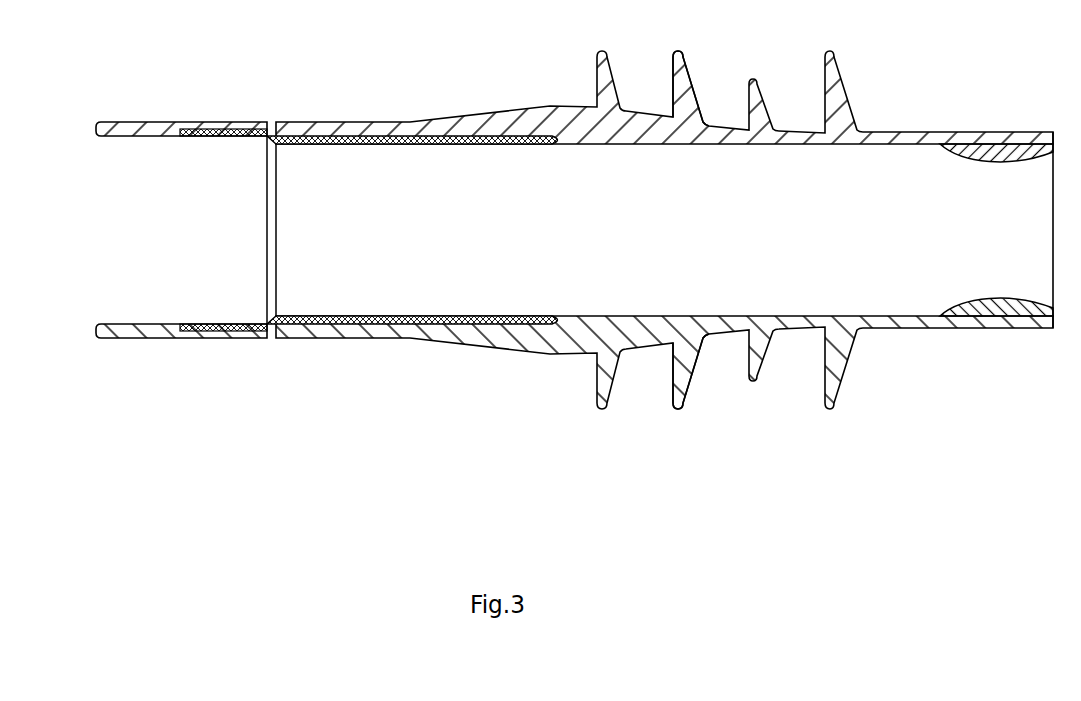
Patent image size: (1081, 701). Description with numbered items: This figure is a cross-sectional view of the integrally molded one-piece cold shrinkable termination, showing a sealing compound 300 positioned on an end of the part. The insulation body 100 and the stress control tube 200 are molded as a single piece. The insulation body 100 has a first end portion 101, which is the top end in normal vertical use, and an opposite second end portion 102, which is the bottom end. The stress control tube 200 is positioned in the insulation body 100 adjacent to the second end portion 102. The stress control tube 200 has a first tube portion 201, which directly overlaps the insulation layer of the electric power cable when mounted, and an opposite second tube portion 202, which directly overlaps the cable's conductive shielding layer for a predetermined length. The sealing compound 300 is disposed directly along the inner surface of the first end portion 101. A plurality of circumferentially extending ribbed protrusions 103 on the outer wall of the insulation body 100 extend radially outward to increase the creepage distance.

The insulation body 100 is at (600, 100).
The first end portion 101 is at (1003, 138).
The second end portion 102 is at (135, 128).
The ribbed protrusions 103 is at (683, 68).
The stress control tube 200 is at (327, 268).
The first tube portion 201 is at (452, 330).
The second tube portion 202 is at (215, 333).
The sealing compound 300 is at (987, 297).